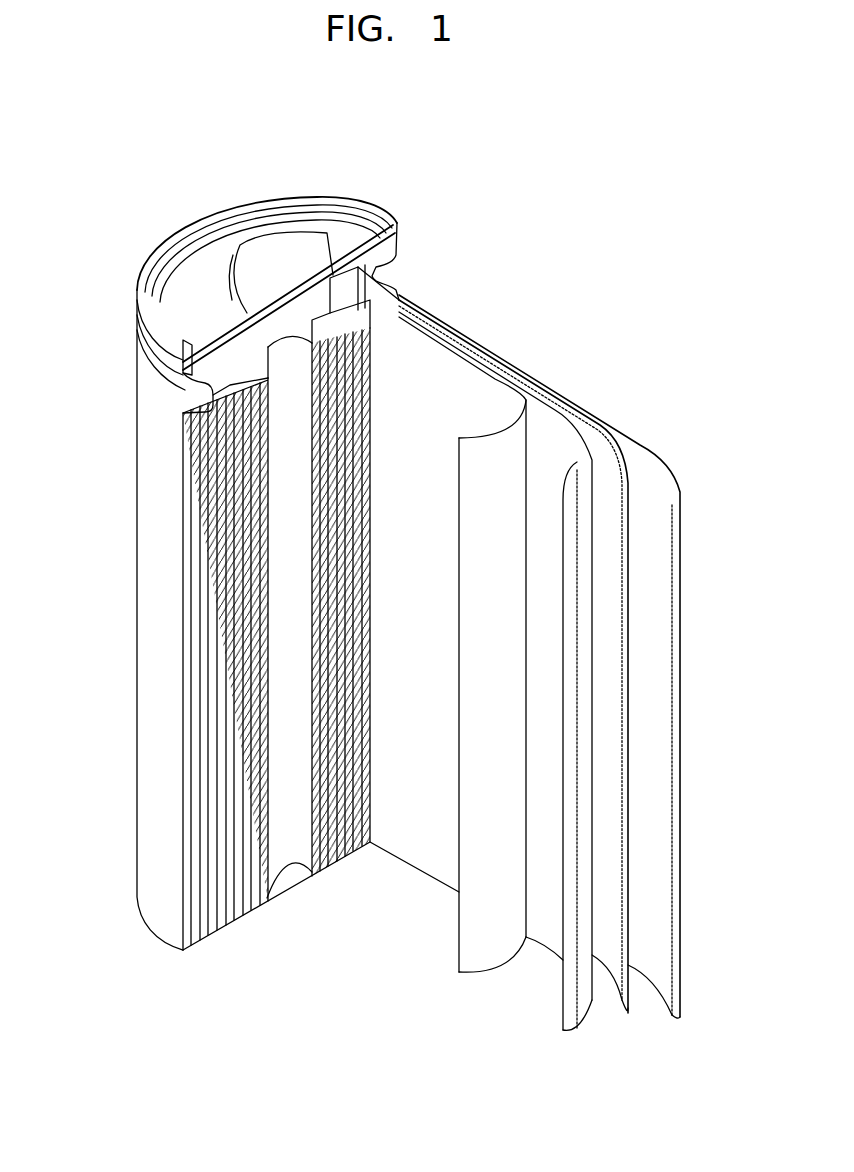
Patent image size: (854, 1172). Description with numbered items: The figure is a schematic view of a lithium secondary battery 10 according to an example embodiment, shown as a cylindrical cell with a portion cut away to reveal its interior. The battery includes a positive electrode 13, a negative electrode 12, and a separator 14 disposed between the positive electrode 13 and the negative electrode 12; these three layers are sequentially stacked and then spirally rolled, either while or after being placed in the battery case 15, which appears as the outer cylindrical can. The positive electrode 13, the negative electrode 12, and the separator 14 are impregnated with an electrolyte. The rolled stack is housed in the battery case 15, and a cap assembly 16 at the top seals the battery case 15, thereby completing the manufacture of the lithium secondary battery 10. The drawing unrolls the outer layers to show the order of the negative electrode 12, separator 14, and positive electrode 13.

The lithium secondary battery 10 is at (500, 231).
The negative electrode 12 is at (672, 462).
The positive electrode 13 is at (555, 412).
The separator 14 is at (470, 362).
The battery case 15 is at (143, 560).
The cap assembly 16 is at (270, 237).